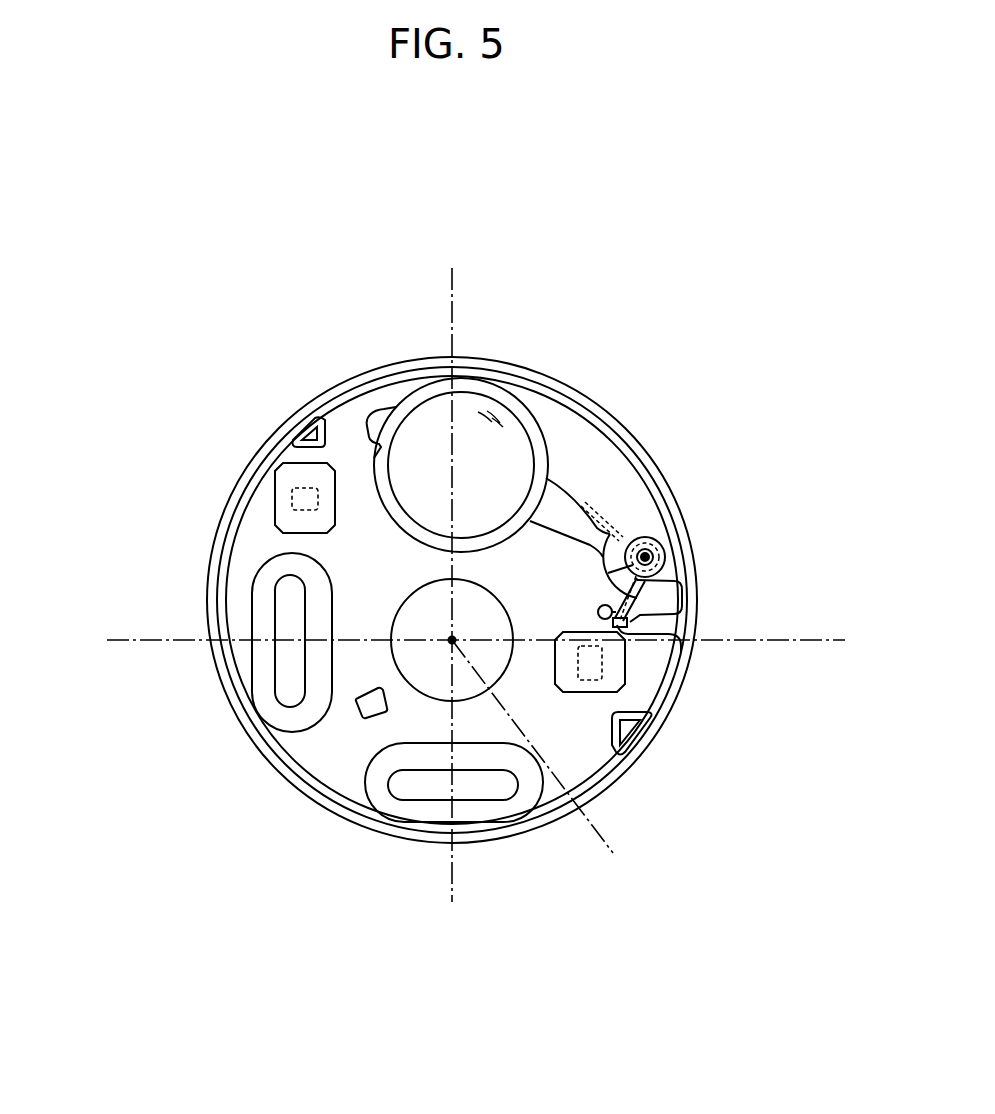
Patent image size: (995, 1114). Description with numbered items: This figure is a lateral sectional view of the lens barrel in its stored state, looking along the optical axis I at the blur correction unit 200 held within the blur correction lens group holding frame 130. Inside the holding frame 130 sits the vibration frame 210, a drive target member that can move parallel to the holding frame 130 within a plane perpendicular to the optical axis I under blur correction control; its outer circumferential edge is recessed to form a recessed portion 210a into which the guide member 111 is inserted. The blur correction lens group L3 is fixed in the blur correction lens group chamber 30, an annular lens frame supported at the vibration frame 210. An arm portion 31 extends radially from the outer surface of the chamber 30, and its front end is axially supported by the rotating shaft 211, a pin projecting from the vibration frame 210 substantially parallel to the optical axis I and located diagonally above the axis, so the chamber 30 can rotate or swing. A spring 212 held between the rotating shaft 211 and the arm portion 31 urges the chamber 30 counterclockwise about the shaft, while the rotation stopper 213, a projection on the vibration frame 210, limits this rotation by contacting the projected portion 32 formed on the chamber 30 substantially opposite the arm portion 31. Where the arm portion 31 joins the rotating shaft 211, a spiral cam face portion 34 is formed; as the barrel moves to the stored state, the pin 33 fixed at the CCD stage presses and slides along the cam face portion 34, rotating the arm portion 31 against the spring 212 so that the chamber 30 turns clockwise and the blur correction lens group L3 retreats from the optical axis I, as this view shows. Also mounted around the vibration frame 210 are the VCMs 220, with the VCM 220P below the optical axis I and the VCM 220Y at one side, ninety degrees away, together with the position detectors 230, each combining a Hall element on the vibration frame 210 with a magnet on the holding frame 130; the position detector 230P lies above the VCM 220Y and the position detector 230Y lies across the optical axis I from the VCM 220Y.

The blur correction unit 200 is at (205, 252).
The blur correction lens group holding frame 130 is at (377, 370).
The vibration frame 210 is at (603, 458).
The recessed portion 210a is at (287, 452).
The guide member 111 is at (310, 424).
The position detectors 230 is at (467, 593).
The position detector 230P is at (275, 513).
The position detector 230Y is at (623, 677).
The VCM 220 is at (297, 757).
The VCM 220P is at (418, 812).
The VCM 220Y is at (263, 694).
The rotation stopper 213 is at (369, 708).
The blur correction lens group chamber 30 is at (535, 408).
The blur correction lens group L3 is at (497, 455).
The projected portion 32 is at (377, 415).
The arm portion 31 is at (578, 522).
The spring 212 is at (641, 538).
The rotating shaft 211 is at (645, 557).
The cam face portion 34 is at (627, 582).
The pin 33 is at (653, 603).
The optical axis I is at (538, 764).